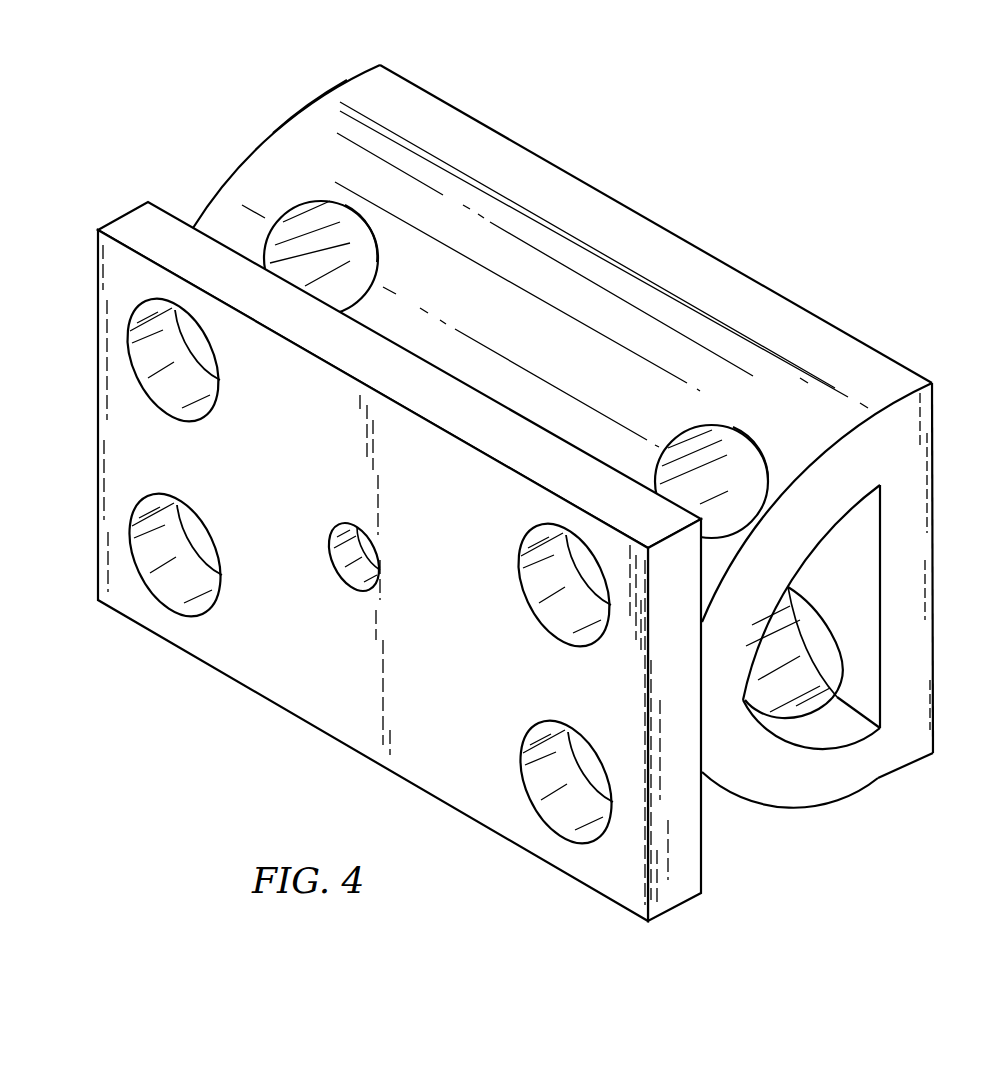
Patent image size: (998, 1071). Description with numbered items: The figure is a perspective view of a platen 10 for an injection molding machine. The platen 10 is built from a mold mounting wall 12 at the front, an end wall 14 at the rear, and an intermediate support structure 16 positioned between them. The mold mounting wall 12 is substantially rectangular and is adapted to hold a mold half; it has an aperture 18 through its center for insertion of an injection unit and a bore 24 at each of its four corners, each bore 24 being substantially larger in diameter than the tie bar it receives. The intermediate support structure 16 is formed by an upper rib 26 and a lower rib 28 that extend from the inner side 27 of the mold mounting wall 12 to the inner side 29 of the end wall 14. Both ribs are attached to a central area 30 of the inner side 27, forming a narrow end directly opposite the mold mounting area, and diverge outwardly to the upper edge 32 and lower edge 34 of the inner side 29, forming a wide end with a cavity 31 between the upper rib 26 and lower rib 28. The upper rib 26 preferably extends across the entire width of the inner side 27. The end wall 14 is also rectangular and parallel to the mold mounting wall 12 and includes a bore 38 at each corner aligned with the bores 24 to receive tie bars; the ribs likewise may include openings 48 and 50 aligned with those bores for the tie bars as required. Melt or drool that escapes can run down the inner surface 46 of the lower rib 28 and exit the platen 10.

The platen 10 is at (515, 479).
The mold mounting wall 12 is at (376, 539).
The end wall 14 is at (538, 158).
The intermediate support structure 16 is at (244, 116).
The aperture 18 is at (335, 563).
The bore 24 is at (153, 343).
The upper rib 26 is at (302, 127).
The inner side of mold mounting wall 27 is at (170, 216).
The lower rib 28 is at (772, 788).
The inner side of end wall 29 is at (860, 669).
The central area 30 is at (327, 688).
The cavity 31 is at (838, 552).
The upper edge 32 is at (895, 378).
The lower edge 34 is at (900, 777).
The bore 38 is at (813, 663).
The inner surface of lower rib 46 is at (840, 732).
The opening 48 is at (353, 275).
The opening 50 is at (828, 677).